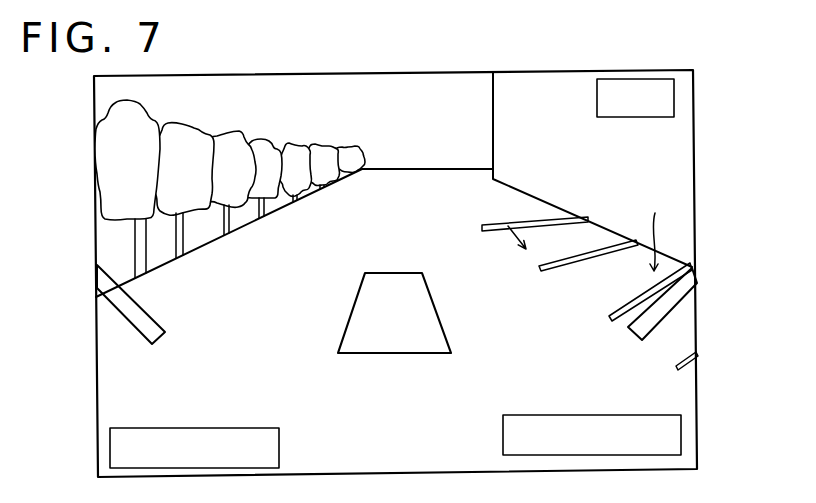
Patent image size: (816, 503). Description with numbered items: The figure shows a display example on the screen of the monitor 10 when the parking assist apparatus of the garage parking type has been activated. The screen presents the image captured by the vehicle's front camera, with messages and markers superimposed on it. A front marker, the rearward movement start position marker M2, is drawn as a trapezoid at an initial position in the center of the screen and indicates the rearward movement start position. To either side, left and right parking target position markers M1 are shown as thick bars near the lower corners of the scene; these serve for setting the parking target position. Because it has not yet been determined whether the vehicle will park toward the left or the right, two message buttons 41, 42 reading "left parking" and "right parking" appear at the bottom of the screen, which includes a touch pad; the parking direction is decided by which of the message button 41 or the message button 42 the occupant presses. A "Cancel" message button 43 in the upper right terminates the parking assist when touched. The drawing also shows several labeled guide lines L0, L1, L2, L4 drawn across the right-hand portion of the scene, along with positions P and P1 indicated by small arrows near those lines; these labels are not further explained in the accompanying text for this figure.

The monitor 10 is at (94, 137).
The message button 41 is at (204, 428).
The message button 42 is at (622, 415).
The message button 43 is at (597, 99).
The parking target position marker M1 is at (148, 313).
The rearward movement start position marker M2 is at (396, 271).
The guide line L0 is at (529, 219).
The guide line L1 is at (609, 242).
The guide line L2 is at (640, 293).
The guide line L4 is at (697, 366).
The parking position P is at (656, 230).
The parking position P1 is at (503, 222).